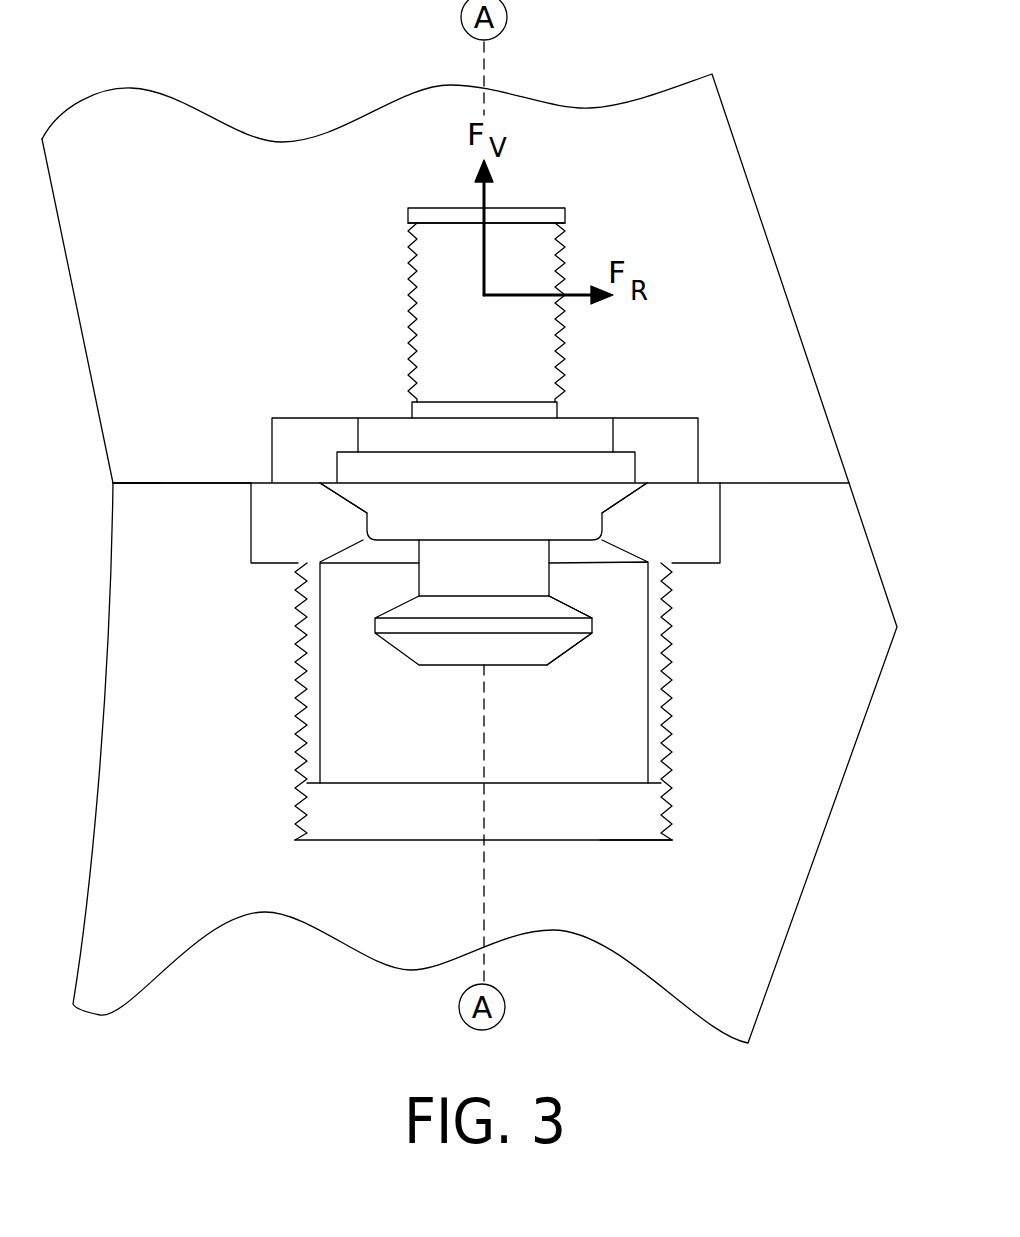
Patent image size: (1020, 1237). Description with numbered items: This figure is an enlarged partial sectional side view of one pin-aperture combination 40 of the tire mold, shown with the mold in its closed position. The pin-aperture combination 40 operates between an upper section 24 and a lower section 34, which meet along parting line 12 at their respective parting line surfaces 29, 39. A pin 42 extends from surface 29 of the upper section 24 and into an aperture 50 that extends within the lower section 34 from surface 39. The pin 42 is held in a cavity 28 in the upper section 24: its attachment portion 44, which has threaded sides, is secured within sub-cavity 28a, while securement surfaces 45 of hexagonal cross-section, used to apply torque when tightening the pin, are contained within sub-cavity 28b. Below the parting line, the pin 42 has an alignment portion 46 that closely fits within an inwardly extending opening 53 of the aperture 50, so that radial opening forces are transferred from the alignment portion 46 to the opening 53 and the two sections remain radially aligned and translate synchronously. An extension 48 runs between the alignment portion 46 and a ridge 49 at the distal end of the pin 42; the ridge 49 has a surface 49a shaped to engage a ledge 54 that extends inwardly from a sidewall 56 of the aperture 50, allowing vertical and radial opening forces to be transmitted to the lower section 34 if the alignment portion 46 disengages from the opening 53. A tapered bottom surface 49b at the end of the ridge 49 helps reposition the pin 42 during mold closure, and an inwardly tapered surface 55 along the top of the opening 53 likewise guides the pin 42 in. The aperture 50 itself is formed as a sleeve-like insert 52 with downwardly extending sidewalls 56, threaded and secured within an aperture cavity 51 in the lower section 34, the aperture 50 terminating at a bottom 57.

The parting line 12 is at (814, 483).
The upper section 24 is at (117, 171).
The cavity 28 is at (522, 208).
The sub-cavity 28a is at (550, 218).
The sub-cavity 28b is at (650, 418).
The parting line surface 29 is at (214, 483).
The lower section 34 is at (125, 946).
The parting line surface 39 is at (163, 484).
The pin-aperture combination 40 is at (742, 358).
The pin 42 is at (442, 260).
The attachment portion 44 is at (480, 354).
The securement surfaces 45 is at (380, 462).
The alignment portion 46 is at (437, 522).
The extension 48 is at (487, 584).
The ridge 49 is at (430, 665).
The ridge surface 49a is at (575, 598).
The tapered bottom surface 49b is at (572, 647).
The aperture 50 is at (676, 733).
The aperture cavity 51 is at (380, 841).
The insert 52 is at (443, 770).
The opening 53 is at (363, 530).
The ledge 54 is at (632, 552).
The inwardly tapered surface 55 is at (342, 498).
The sidewalls 56 is at (313, 757).
The bottom 57 is at (641, 841).